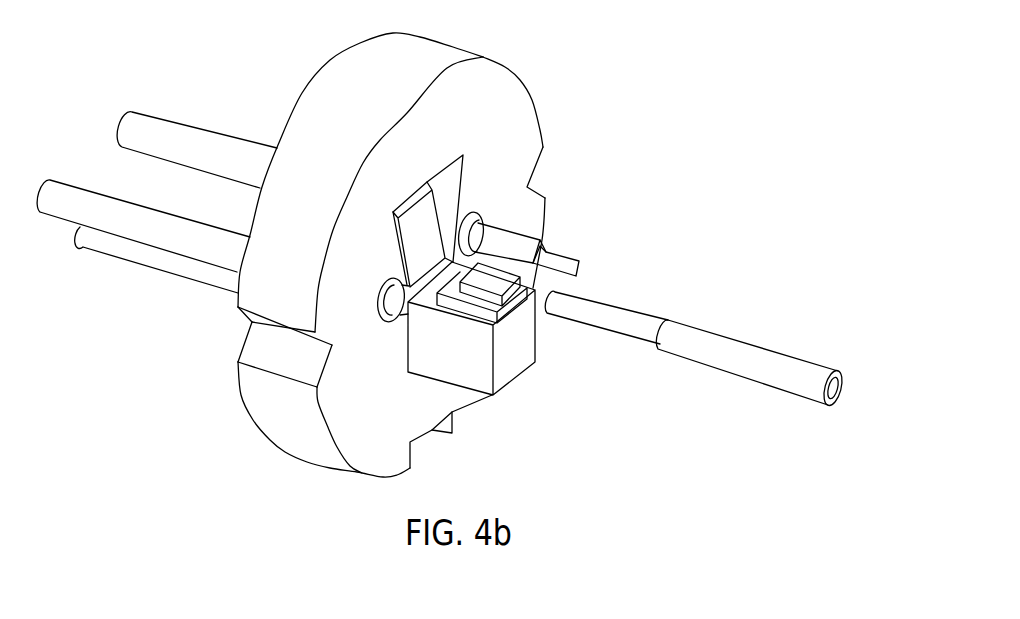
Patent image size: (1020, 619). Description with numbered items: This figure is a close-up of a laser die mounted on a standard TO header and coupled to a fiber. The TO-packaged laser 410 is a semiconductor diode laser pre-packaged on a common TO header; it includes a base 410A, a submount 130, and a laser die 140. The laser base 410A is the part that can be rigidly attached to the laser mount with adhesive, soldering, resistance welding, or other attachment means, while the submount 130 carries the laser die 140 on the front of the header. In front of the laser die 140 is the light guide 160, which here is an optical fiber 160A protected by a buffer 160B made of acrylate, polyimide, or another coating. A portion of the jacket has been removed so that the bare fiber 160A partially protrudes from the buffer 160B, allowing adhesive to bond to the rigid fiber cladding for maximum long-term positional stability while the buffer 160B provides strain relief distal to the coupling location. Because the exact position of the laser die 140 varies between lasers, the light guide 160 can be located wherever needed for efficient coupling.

The TO-packaged laser 410 is at (366, 255).
The base 410A is at (290, 418).
The submount 130 is at (453, 290).
The laser die 140 is at (497, 280).
The light guide 160 is at (701, 350).
The optical fiber 160A is at (620, 323).
The buffer 160B is at (707, 357).